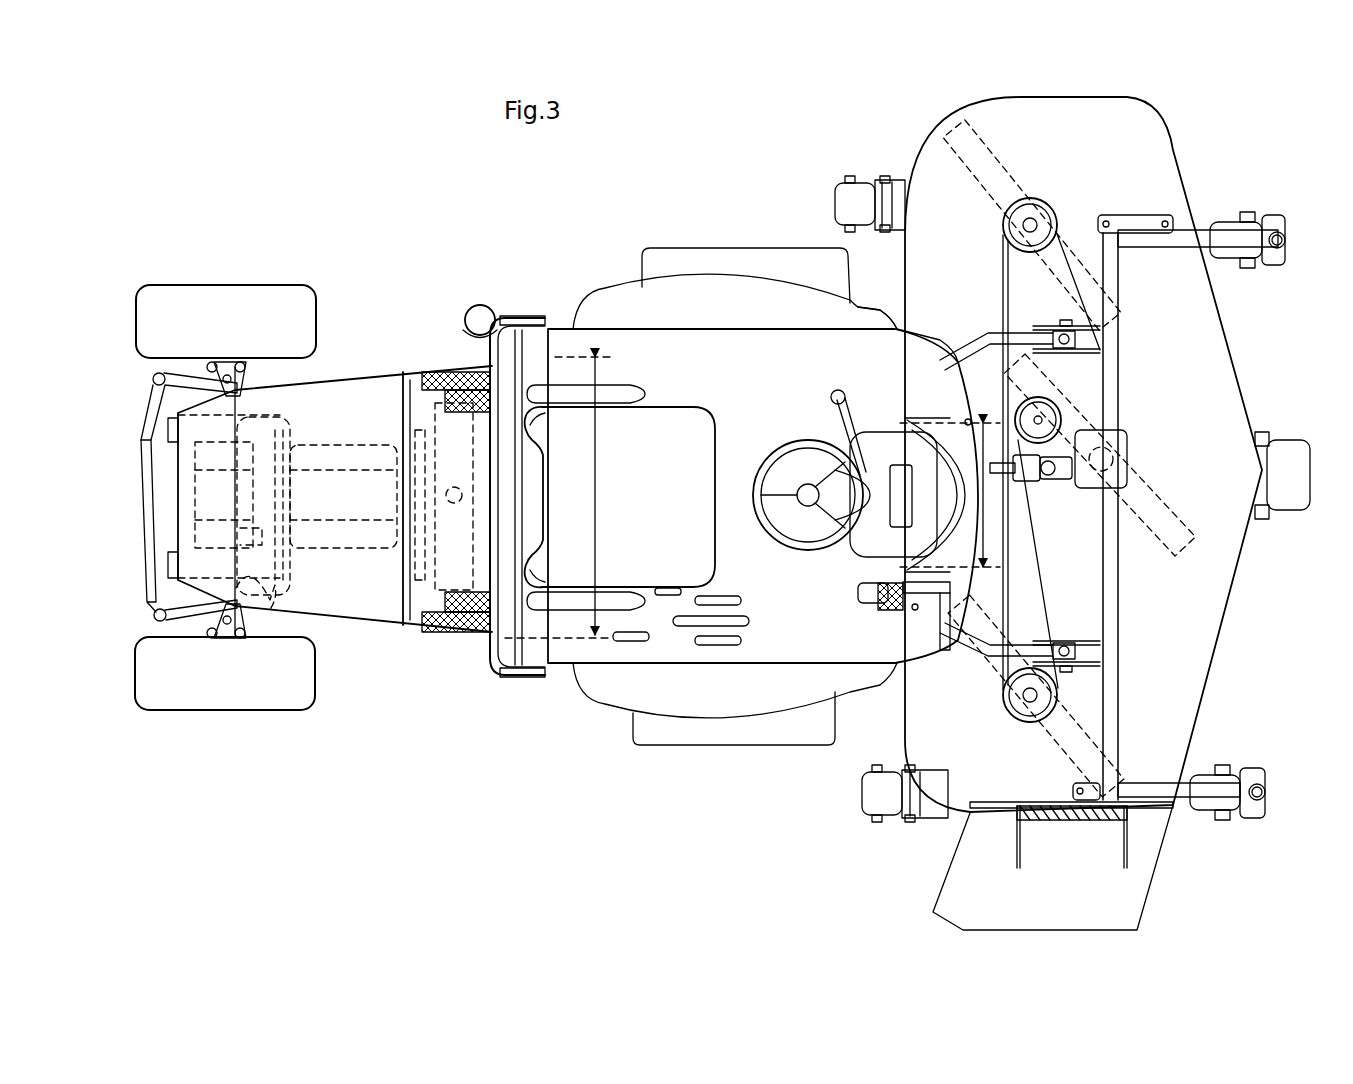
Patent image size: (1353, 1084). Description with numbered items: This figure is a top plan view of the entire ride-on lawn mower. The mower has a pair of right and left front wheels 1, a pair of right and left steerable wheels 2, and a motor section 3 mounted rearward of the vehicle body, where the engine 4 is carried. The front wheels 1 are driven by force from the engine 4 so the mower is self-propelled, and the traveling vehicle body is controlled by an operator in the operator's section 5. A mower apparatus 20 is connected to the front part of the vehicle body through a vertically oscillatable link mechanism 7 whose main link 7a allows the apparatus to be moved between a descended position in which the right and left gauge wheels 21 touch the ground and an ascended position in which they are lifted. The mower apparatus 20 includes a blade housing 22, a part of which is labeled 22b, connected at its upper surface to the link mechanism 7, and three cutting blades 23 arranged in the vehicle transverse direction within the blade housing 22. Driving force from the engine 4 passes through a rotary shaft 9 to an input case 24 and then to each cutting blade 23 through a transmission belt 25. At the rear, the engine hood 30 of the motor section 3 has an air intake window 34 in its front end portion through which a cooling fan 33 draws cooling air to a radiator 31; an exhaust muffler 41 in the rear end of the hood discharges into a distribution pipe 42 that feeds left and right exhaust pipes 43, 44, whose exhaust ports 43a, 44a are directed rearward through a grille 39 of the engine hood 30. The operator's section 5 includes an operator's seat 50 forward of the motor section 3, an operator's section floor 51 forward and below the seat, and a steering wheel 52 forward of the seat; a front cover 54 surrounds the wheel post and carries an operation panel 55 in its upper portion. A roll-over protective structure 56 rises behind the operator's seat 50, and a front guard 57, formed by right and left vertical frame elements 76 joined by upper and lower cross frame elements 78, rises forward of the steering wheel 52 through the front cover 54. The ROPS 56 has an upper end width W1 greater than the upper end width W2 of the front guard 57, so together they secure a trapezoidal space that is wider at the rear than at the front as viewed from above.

The front wheels 1 is at (740, 262).
The steerable wheels 2 is at (235, 296).
The motor section 3 is at (372, 366).
The engine 4 is at (350, 445).
The operator's section 5 is at (690, 352).
The link mechanism 7 is at (982, 652).
The main link 7a is at (1020, 343).
The rotary shaft 9 is at (1020, 482).
The mower apparatus 20 is at (1215, 192).
The gauge wheels 21 is at (1292, 262).
The blade housing 22 is at (1205, 602).
The caster wheel 22b is at (891, 499).
The cutting blades 23 is at (1012, 178).
The input case 24 is at (1125, 432).
The transmission belt 25 is at (1045, 578).
The engine hood 30 is at (380, 603).
The radiator 31 is at (455, 612).
The cooling fan 33 is at (430, 562).
The air intake window 34 is at (437, 368).
The grille 39 is at (182, 517).
The exhaust muffler 41 is at (195, 505).
The distribution pipe 42 is at (292, 552).
The left exhaust pipe 43 is at (207, 408).
The exhaust port 43a is at (168, 425).
The right exhaust pipe 44 is at (257, 596).
The exhaust port 44a is at (168, 578).
The operator's seat 50 is at (657, 415).
The operator's section floor 51 is at (906, 362).
The steering wheel 52 is at (800, 440).
The front cover 54 is at (862, 440).
The operation panel 55 is at (895, 515).
The roll-over protective structure (ROPS) 56 is at (512, 472).
The front guard 57 is at (940, 375).
The vertical frame elements 76 is at (968, 420).
The cross frame elements 78 is at (935, 428).
The upper end width of the ROPS W1 is at (597, 495).
The upper end width of the front guard W2 is at (985, 515).